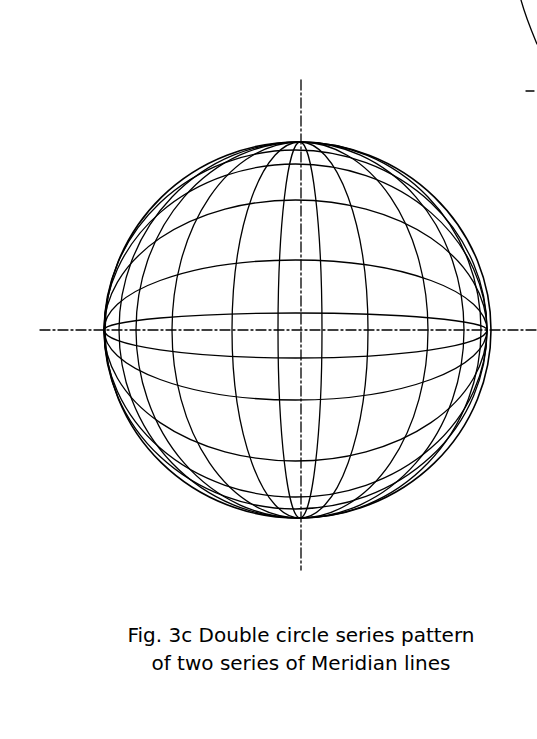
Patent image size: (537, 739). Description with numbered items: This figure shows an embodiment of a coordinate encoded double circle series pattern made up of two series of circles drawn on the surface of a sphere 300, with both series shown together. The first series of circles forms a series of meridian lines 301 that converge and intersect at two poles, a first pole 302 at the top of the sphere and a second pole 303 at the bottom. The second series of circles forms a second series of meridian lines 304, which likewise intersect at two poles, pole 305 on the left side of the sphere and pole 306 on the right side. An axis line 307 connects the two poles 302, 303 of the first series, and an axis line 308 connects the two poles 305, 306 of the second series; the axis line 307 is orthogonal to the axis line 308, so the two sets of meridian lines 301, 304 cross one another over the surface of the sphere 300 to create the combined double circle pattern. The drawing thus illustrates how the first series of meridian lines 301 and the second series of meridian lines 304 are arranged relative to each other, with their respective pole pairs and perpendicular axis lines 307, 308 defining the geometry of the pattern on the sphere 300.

The sphere 300 is at (178, 70).
The meridian lines 301 is at (354, 162).
The first pole 302 is at (300, 141).
The second pole 303 is at (301, 518).
The second series of meridian lines 304 is at (206, 316).
The pole 305 is at (103, 330).
The pole 306 is at (488, 332).
The axis line 307 is at (327, 543).
The axis line 308 is at (509, 300).